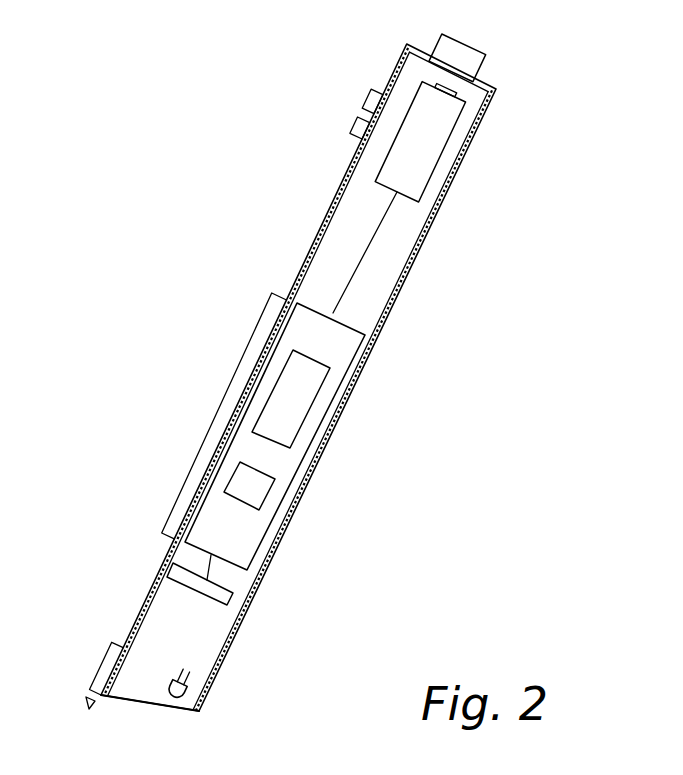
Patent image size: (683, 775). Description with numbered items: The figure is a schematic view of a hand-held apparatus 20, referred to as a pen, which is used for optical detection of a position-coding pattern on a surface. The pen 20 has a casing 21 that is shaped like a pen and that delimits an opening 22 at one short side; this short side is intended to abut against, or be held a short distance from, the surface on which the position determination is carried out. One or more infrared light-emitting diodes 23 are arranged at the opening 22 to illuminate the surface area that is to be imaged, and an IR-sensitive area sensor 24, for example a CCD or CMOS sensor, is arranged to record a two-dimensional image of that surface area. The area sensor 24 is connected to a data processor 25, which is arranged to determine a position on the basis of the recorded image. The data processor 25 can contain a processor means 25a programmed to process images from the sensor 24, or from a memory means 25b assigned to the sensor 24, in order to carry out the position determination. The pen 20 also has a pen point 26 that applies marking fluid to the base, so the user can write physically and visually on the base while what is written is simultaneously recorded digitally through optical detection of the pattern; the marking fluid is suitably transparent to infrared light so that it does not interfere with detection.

The hand-held apparatus 20 is at (270, 240).
The casing 21 is at (403, 283).
The opening 22 is at (141, 702).
The infrared light-emitting diode 23 is at (196, 673).
The IR-sensitive area sensor 24 is at (226, 587).
The data processor 25 is at (331, 353).
The processor means 25a is at (282, 404).
The memory means 25b is at (245, 478).
The pen point 26 is at (108, 662).